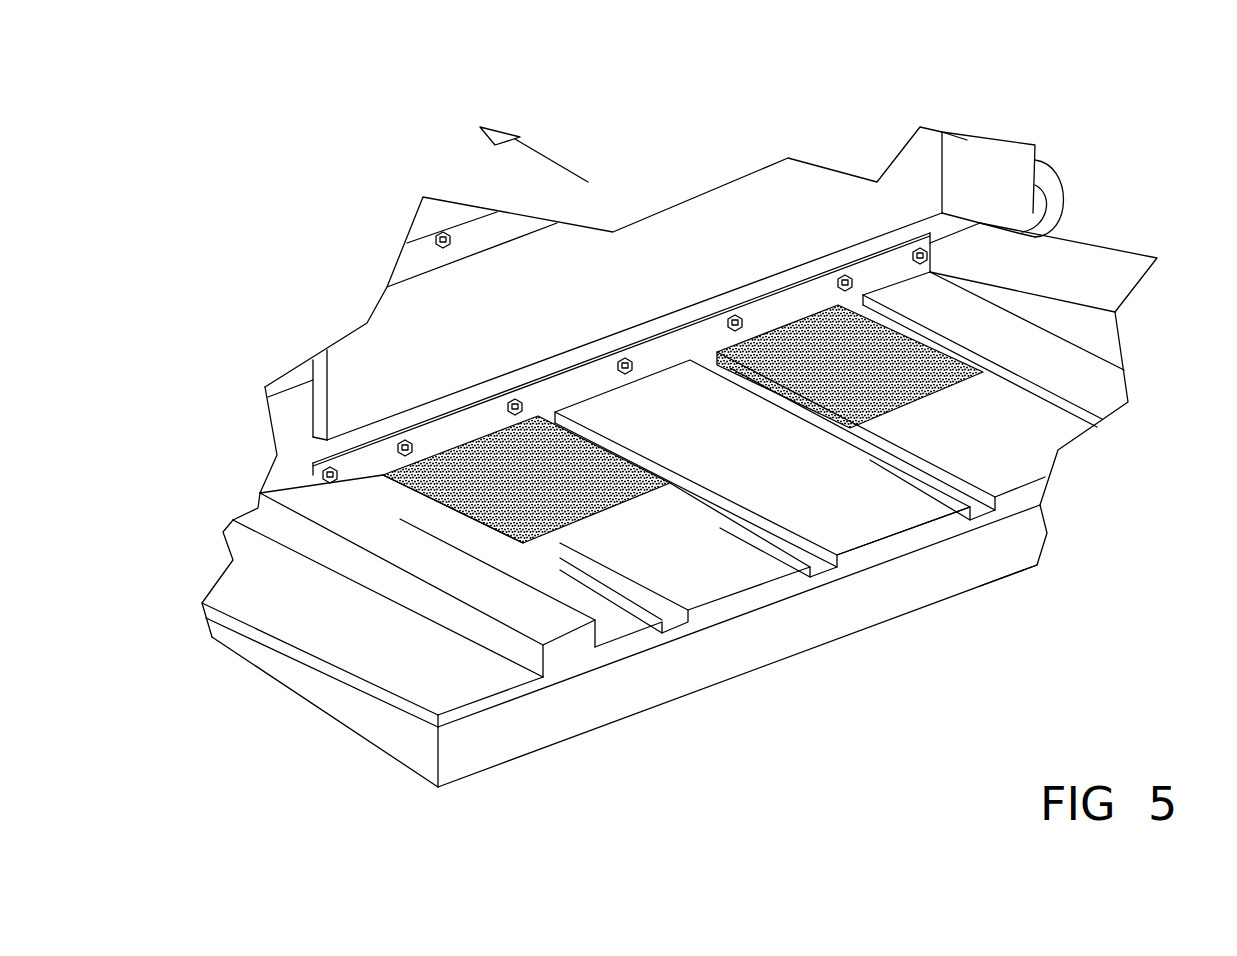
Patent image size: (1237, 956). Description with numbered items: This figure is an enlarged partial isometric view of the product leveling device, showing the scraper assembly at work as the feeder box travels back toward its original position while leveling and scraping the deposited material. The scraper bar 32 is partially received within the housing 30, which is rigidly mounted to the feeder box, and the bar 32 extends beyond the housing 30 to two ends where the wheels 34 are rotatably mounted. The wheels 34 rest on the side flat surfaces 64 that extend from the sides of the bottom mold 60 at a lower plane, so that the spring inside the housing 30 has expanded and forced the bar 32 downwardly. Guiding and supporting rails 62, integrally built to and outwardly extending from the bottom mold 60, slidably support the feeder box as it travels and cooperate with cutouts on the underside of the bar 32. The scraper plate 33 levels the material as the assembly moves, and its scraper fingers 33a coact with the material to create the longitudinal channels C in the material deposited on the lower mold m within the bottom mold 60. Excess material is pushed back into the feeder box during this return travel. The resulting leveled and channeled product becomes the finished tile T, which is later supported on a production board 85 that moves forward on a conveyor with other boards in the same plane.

The housing 30 is at (915, 175).
The wheels 34 is at (1057, 173).
The scraper plate 33 is at (372, 458).
The scraper bar 32 is at (285, 428).
The scraper fingers 33a is at (397, 473).
The side flat surfaces 64 is at (425, 688).
The guiding and supporting rails 62 is at (535, 603).
The production board 85 is at (792, 668).
The bottom mold 60 is at (862, 575).
The channels C is at (643, 473).
The finished tile T is at (935, 362).
The lower mold m is at (1018, 573).